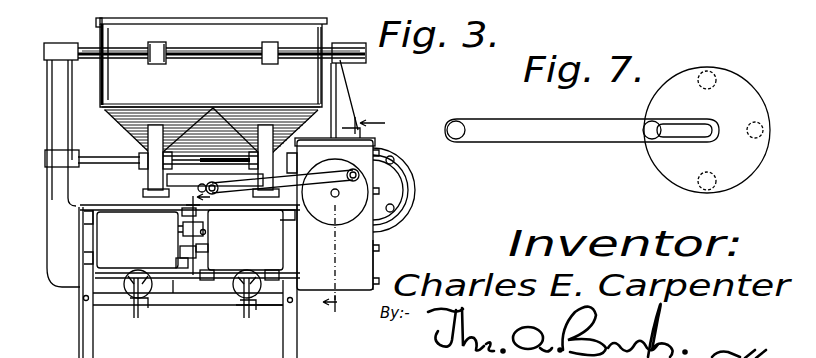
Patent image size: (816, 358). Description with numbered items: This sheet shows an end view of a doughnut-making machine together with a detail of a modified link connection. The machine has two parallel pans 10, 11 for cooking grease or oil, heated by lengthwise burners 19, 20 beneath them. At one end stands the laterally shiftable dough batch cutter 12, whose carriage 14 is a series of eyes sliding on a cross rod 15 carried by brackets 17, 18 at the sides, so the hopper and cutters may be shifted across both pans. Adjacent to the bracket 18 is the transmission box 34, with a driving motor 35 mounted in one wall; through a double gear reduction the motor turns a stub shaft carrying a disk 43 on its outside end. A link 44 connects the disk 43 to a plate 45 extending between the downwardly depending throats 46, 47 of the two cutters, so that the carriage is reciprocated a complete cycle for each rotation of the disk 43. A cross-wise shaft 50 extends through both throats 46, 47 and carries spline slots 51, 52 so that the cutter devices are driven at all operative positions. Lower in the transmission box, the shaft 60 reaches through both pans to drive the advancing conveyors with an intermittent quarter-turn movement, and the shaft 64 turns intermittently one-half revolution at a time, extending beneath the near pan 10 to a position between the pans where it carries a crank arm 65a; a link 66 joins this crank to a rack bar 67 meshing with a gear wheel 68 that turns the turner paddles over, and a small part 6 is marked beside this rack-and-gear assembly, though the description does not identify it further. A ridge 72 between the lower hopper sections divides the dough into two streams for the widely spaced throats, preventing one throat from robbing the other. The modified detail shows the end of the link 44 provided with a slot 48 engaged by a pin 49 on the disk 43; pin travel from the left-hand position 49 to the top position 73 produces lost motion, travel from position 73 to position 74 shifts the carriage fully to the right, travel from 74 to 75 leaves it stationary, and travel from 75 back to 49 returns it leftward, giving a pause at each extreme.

In FIG. 3, the adjusting bolt 6 is at (206, 232).
In FIG. 3, the pan 10 is at (245, 240).
In FIG. 3, the pan 11 is at (189, 281).
In FIG. 3, the dough batch cutter 12 is at (288, 15).
In FIG. 3, the carriage 14 is at (265, 42).
In FIG. 3, the cross rod 15 is at (180, 62).
In FIG. 3, the bracket 17 is at (57, 113).
In FIG. 3, the bracket 18 is at (340, 94).
In FIG. 3, the burner 19 is at (223, 296).
In FIG. 3, the burner 20 is at (125, 290).
In FIG. 3, the transmission box 34 is at (347, 224).
In FIG. 3, the driving motor 35 is at (388, 185).
In FIG. 3, the disk 43 is at (352, 212).
In FIG. 7, the disk 43 is at (720, 88).
In FIG. 3, the link 44 is at (332, 195).
In FIG. 7, the link 44 is at (545, 142).
In FIG. 3, the plate 45 is at (187, 183).
In FIG. 3, the throat 46 is at (157, 170).
In FIG. 3, the throat 47 is at (253, 182).
In FIG. 7, the slot 48 is at (680, 135).
In FIG. 7, the pin 49 is at (652, 130).
In FIG. 3, the shaft 50 is at (207, 162).
In FIG. 3, the spline slot 51 is at (245, 158).
In FIG. 3, the spline slot 52 is at (128, 160).
In FIG. 3, the shaft 60 is at (180, 258).
In FIG. 3, the shaft 64 is at (267, 297).
In FIG. 3, the crank arm 65a is at (180, 288).
In FIG. 3, the link 66 is at (208, 253).
In FIG. 3, the rack bar 67 is at (180, 225).
In FIG. 3, the gear wheel 68 is at (182, 210).
In FIG. 3, the ridge 72 is at (223, 107).
In FIG. 7, the pin position 73 is at (707, 71).
In FIG. 7, the pin position 74 is at (755, 138).
In FIG. 7, the pin position 75 is at (716, 187).